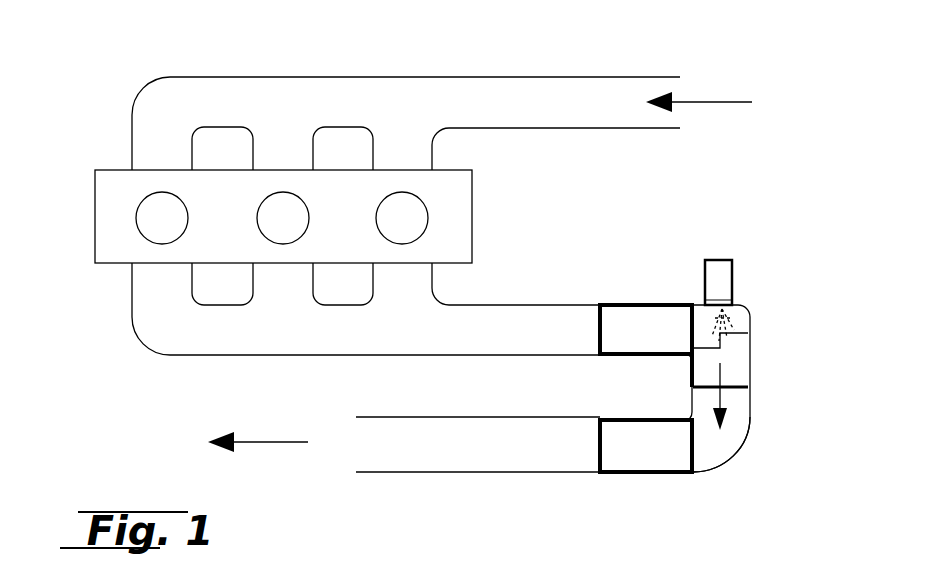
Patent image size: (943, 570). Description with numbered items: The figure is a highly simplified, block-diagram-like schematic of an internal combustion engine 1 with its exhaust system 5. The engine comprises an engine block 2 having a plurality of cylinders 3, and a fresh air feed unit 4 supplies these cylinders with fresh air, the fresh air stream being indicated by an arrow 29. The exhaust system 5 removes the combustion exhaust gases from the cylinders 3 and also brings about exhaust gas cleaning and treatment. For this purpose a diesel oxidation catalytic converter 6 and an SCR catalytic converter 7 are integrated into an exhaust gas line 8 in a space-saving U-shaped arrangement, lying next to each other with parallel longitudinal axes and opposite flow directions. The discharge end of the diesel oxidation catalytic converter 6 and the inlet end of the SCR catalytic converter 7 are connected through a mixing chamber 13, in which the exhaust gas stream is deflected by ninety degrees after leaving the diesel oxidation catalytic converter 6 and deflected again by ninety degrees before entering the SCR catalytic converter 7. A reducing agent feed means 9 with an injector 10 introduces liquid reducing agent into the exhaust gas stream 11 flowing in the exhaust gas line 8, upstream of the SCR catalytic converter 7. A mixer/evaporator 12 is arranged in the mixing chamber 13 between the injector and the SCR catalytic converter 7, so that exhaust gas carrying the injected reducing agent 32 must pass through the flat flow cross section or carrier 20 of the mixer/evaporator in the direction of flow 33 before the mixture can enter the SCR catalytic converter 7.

The internal combustion engine 1 is at (103, 85).
The engine block 2 is at (112, 221).
The cylinders 3 is at (168, 219).
The fresh air feed unit 4 is at (558, 72).
The exhaust system 5 is at (768, 377).
The diesel oxidation catalytic converter 6 is at (637, 330).
The SCR catalytic converter 7 is at (637, 452).
The exhaust gas line 8 is at (448, 453).
The reducing agent feed means 9 is at (723, 291).
The injector 10 is at (718, 275).
The exhaust gas stream 11 is at (258, 427).
The mixer/evaporator 12 is at (732, 357).
The mixing chamber 13 is at (722, 452).
The carrier 20 is at (672, 383).
The fresh air stream arrow 29 is at (723, 103).
The injected reducing agent 32 is at (735, 326).
The direction of flow 33 is at (722, 404).